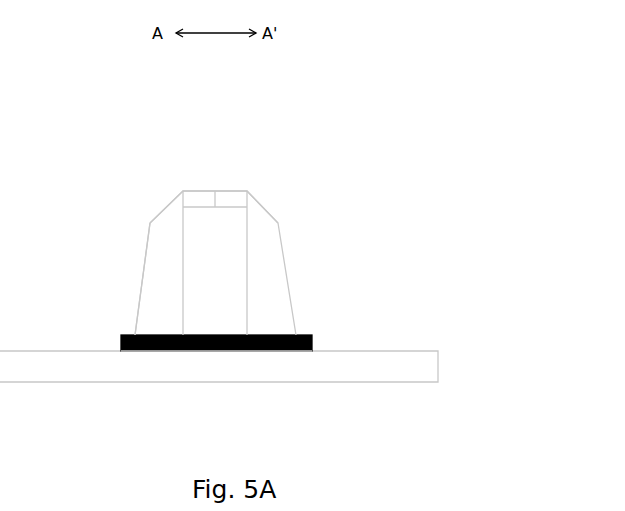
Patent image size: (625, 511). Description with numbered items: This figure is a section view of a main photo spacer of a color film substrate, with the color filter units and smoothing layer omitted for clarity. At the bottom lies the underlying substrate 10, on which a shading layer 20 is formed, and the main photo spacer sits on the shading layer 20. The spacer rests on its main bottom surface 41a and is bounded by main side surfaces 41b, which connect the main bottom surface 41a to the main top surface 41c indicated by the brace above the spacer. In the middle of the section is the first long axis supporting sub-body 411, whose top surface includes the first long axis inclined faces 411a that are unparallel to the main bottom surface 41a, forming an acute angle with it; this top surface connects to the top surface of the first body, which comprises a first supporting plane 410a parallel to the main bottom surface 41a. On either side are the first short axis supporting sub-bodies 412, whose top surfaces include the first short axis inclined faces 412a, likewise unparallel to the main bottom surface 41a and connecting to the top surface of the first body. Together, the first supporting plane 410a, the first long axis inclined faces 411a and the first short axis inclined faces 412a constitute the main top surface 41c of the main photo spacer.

The underlying substrate 10 is at (423, 363).
The shading layer 20 is at (312, 335).
The main bottom surface 41a is at (230, 351).
The main side surfaces 41b is at (137, 318).
The main top surface 41c is at (318, 122).
The first supporting plane 410a is at (213, 190).
The first long axis supporting sub-body 411 is at (207, 292).
The first long axis inclined face 411a is at (205, 202).
The first short axis supporting sub-body 412 is at (163, 268).
The first short axis inclined face 412a is at (168, 211).